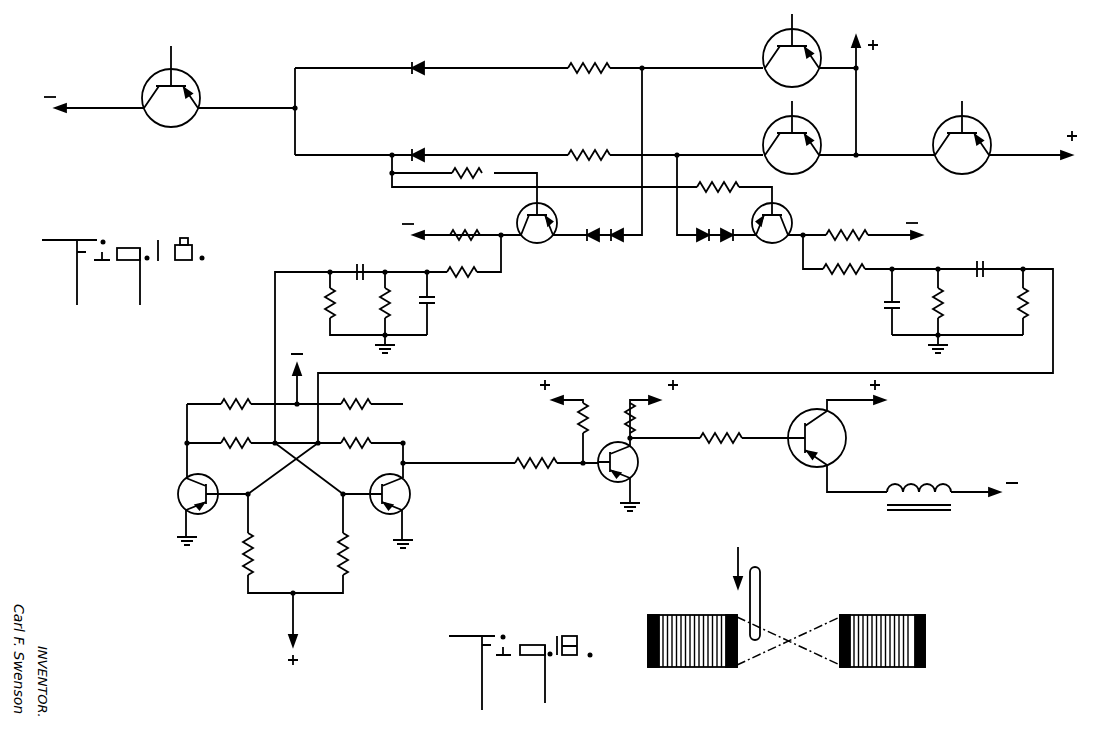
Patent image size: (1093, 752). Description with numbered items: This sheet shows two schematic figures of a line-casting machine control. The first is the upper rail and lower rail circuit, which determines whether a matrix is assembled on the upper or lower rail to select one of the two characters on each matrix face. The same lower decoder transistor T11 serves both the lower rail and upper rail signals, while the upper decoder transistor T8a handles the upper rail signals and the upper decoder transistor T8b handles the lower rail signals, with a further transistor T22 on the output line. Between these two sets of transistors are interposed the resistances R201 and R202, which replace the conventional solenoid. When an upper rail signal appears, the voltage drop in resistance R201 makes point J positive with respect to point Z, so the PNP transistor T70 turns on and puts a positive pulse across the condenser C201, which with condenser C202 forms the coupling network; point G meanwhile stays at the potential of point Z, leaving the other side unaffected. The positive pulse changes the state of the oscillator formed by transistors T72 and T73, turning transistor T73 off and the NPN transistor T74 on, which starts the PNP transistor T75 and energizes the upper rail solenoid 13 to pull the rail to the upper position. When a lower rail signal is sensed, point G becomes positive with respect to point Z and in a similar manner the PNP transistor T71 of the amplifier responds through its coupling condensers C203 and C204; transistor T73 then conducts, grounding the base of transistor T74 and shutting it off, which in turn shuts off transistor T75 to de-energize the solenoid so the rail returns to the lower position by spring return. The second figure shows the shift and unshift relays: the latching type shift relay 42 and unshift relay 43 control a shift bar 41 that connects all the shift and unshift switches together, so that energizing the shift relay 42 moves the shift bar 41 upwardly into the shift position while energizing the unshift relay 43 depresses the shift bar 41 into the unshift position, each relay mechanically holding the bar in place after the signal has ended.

In FIG. 18, the lower decoder transistor T11 is at (169, 86).
In FIG. 18, the resistance R201 is at (589, 57).
In FIG. 18, the resistance R202 is at (589, 145).
In FIG. 18, the point J is at (636, 137).
In FIG. 18, the point Z is at (574, 166).
In FIG. 18, the point G is at (684, 182).
In FIG. 18, the upper decoder transistor T8a is at (797, 50).
In FIG. 18, the upper decoder transistor T8b is at (803, 137).
In FIG. 18, the transistor T22 is at (973, 137).
In FIG. 18, the transistor T70 is at (515, 236).
In FIG. 18, the transistor T71 is at (809, 236).
In FIG. 18, the condenser C201 is at (358, 262).
In FIG. 18, the condenser C202 is at (443, 303).
In FIG. 18, the condenser C203 is at (977, 261).
In FIG. 18, the condenser C204 is at (872, 302).
In FIG. 18, the oscillator transistor T72 is at (207, 486).
In FIG. 18, the oscillator transistor T73 is at (390, 495).
In FIG. 18, the transistor T74 is at (636, 462).
In FIG. 18, the transistor T75 is at (827, 438).
In FIG. 18, the upper rail solenoid 13 is at (924, 489).
In FIG. 19, the shift bar 41 is at (760, 598).
In FIG. 19, the shift relay 42 is at (680, 614).
In FIG. 19, the unshift relay 43 is at (896, 614).